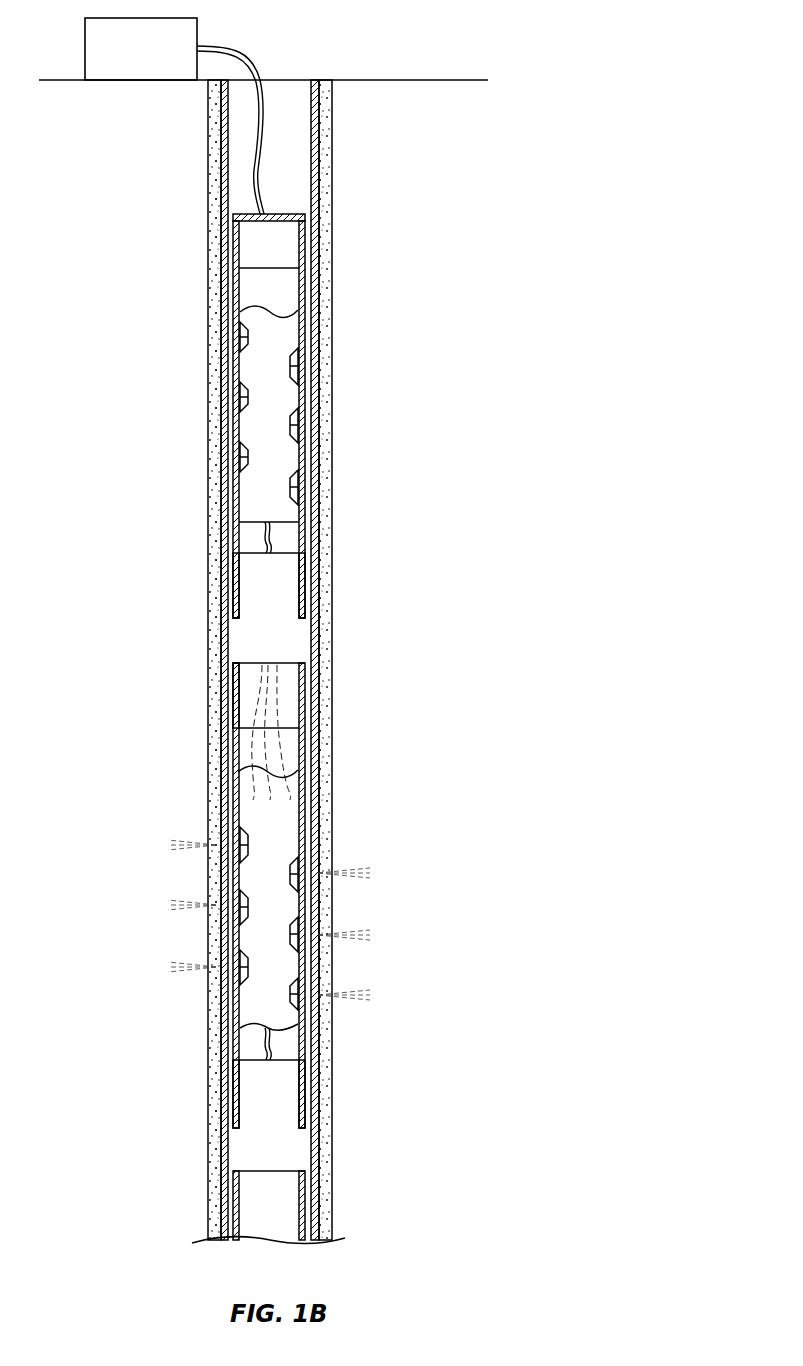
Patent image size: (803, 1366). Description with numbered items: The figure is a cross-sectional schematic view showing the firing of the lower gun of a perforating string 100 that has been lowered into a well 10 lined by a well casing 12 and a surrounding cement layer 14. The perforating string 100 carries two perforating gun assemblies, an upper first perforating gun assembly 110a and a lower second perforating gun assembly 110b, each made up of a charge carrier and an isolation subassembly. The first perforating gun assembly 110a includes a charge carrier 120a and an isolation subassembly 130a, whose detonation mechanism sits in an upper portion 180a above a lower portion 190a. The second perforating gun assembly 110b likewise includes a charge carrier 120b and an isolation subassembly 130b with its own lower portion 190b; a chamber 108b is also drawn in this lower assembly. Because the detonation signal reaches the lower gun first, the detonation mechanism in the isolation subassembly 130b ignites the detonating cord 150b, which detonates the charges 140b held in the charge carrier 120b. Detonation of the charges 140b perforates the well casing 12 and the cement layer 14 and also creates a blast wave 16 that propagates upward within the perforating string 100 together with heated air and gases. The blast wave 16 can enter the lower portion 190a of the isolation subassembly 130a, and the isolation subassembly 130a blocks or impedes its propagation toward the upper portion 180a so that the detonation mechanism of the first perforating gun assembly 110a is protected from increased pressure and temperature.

The well 10 is at (295, 103).
The well casing 12 is at (322, 100).
The cement layer 14 is at (322, 138).
The perforating string 100 is at (283, 198).
The first perforating gun assembly 110a is at (412, 505).
The charge carrier 120a is at (292, 513).
The upper portion of the isolation subassembly 180a is at (262, 562).
The isolation subassembly 130a is at (293, 642).
The blast wave 16 is at (282, 702).
The lower portion of the isolation subassembly 190a is at (238, 718).
The charges 140b is at (293, 872).
The second perforating gun assembly 110b is at (128, 990).
The charge carrier 120b is at (248, 1002).
The detonating cord 150b is at (286, 1050).
The chamber 108b is at (285, 1074).
The isolation subassembly 130b is at (257, 1083).
The lower portion of the isolation subassembly 190b is at (290, 1236).